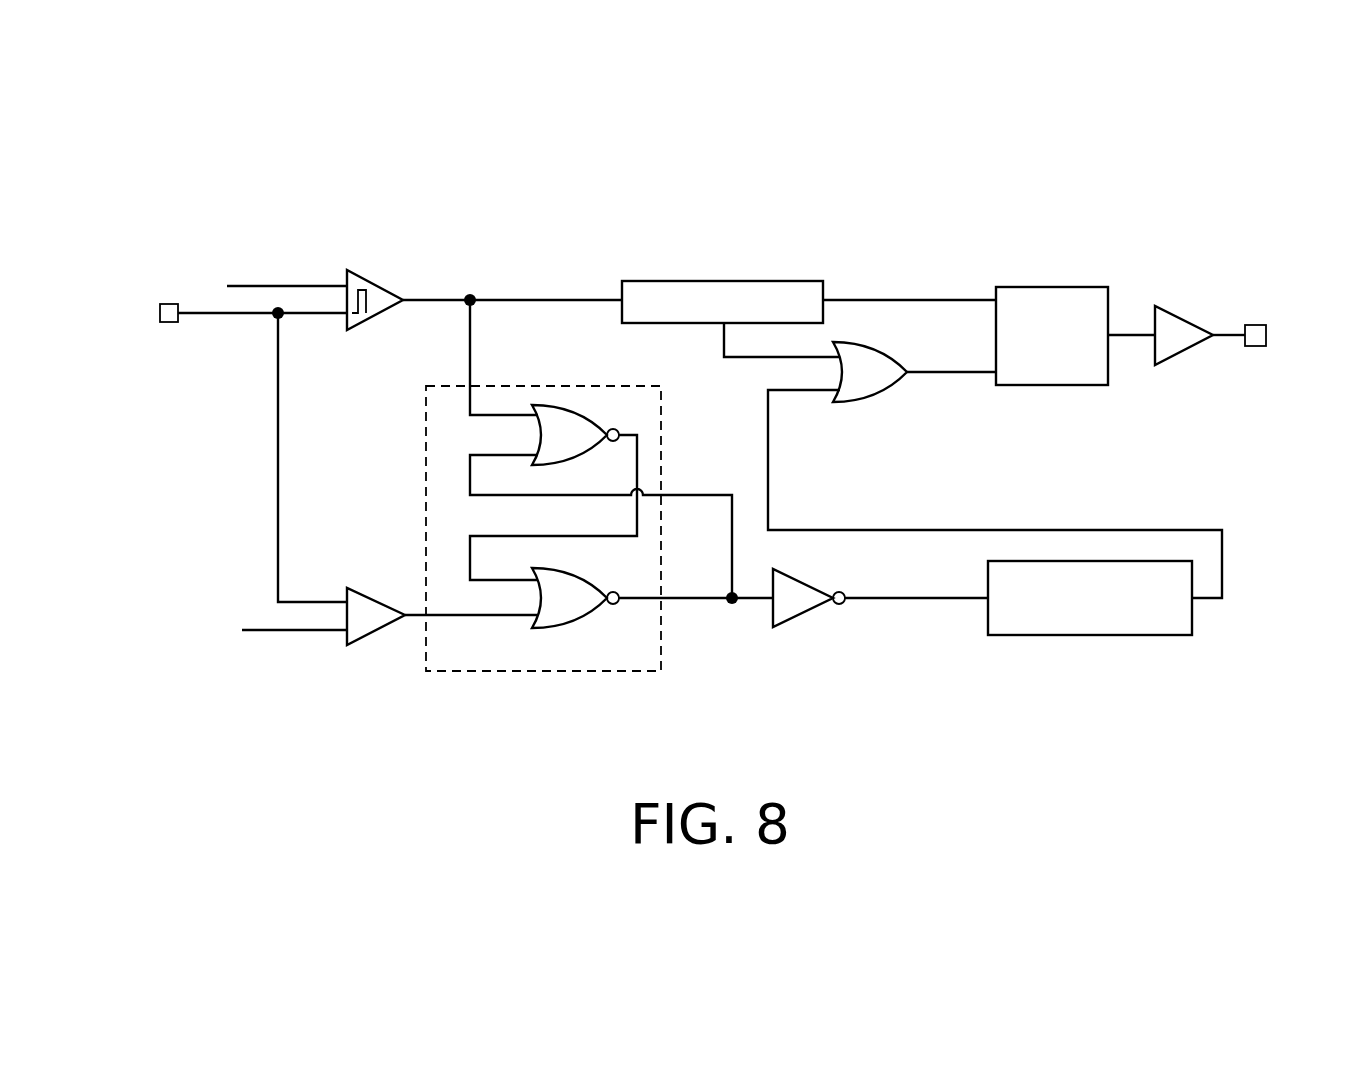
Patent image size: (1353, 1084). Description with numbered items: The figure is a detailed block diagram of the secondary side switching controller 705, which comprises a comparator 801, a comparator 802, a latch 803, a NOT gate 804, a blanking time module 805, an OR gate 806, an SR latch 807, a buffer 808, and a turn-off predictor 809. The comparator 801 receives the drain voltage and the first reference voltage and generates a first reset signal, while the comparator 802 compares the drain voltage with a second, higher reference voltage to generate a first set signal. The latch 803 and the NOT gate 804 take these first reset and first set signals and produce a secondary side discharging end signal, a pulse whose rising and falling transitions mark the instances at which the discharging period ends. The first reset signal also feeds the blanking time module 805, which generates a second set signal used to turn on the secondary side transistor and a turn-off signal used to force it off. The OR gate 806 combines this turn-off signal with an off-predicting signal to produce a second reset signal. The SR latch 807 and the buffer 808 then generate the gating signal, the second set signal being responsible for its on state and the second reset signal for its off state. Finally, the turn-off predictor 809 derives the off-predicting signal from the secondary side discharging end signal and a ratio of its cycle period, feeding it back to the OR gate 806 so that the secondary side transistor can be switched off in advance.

The secondary side switching controller 705 is at (1223, 147).
The comparator 801 is at (368, 281).
The comparator 802 is at (377, 630).
The latch 803 is at (487, 672).
The NOT gate 804 is at (805, 608).
The blanking time module 805 is at (723, 281).
The OR gate 806 is at (873, 402).
The SR latch 807 is at (1052, 287).
The buffer 808 is at (1187, 352).
The turn-off predictor 809 is at (1073, 636).